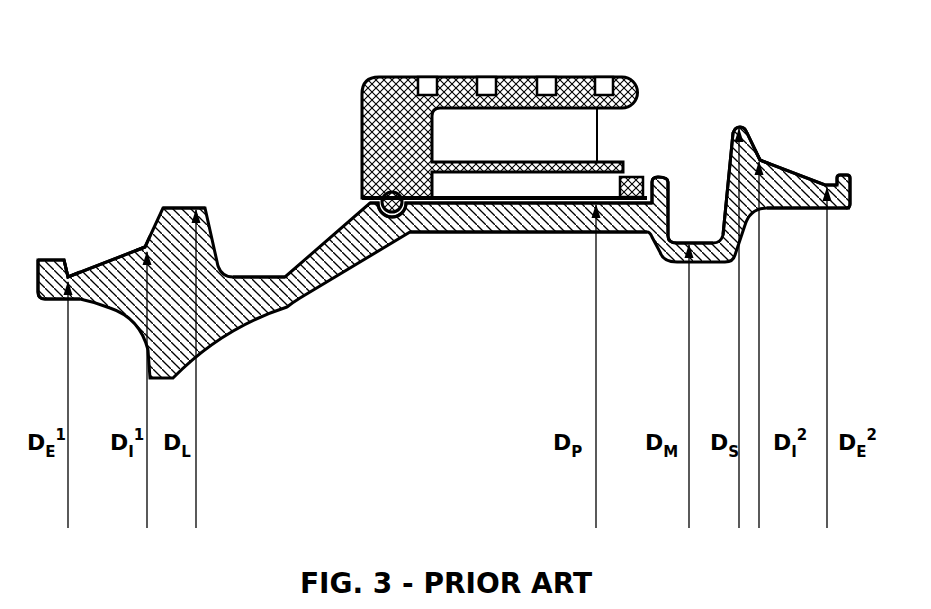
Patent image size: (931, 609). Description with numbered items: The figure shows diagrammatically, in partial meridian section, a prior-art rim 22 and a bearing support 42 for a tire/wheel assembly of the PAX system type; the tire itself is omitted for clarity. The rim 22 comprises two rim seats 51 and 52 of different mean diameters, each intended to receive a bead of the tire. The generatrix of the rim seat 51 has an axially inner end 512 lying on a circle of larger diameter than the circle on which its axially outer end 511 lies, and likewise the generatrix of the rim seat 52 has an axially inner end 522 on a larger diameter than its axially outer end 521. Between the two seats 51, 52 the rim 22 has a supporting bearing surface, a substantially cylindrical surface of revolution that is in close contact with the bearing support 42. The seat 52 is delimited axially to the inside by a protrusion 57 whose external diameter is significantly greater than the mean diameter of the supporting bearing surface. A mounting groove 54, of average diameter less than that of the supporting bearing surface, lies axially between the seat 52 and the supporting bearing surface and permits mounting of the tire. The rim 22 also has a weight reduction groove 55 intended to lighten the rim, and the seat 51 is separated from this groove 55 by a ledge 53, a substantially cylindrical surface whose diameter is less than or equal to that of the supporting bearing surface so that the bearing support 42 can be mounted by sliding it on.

The rim 22 is at (563, 231).
The bearing support 42 is at (400, 77).
The rim seat 51 is at (103, 253).
The axially outer end 511 is at (68, 277).
The axially inner end 512 is at (140, 240).
The rim seat 52 is at (792, 170).
The axially outer end 521 is at (818, 185).
The axially inner end 522 is at (761, 160).
The ledge 53 is at (185, 207).
The mounting groove 54 is at (695, 205).
The weight reduction groove 55 is at (265, 243).
The protrusion 57 is at (740, 127).